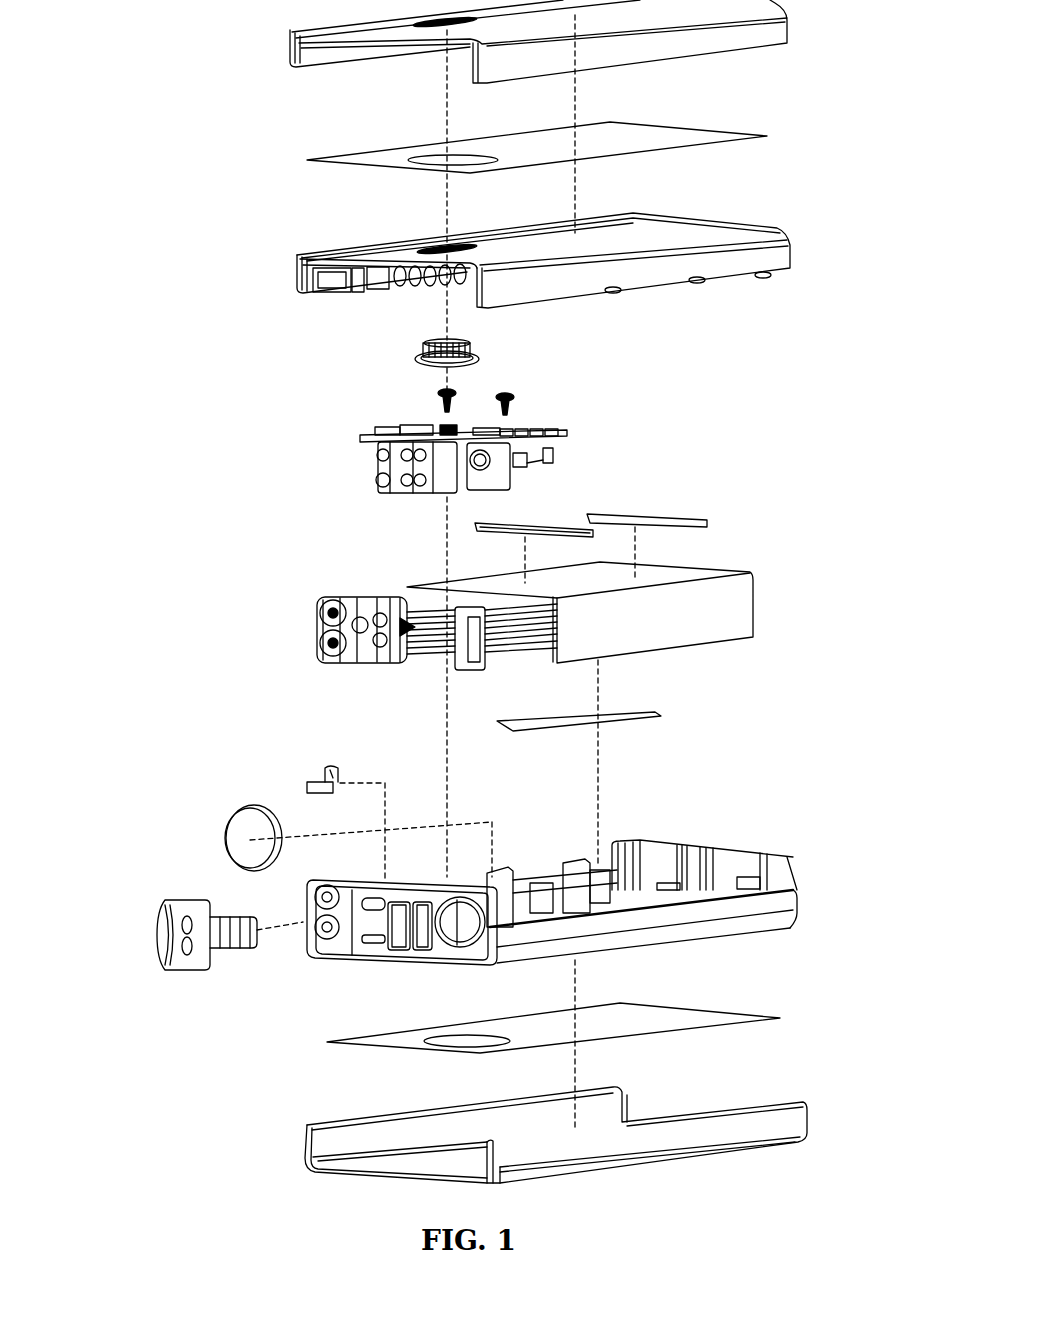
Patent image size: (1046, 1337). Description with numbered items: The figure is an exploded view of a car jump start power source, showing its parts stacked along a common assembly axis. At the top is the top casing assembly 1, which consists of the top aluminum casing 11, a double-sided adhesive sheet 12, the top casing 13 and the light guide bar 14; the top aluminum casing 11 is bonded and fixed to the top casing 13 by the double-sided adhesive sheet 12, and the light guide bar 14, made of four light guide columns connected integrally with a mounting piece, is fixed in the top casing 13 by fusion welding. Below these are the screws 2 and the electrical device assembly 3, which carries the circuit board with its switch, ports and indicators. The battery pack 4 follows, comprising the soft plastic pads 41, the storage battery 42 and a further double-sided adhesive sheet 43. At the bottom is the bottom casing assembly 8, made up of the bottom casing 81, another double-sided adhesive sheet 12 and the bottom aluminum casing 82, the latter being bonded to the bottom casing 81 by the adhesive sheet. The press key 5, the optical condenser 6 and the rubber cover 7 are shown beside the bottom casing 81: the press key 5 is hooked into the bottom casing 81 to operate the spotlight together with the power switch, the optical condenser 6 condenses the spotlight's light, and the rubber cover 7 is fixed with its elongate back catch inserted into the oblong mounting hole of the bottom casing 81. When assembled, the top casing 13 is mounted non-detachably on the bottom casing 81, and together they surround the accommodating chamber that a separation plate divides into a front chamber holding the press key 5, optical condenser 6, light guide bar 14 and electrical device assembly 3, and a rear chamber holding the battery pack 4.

The top casing assembly 1 is at (177, 238).
The top aluminum casing 11 is at (290, 68).
The double-sided adhesive sheet 12 is at (307, 161).
The top casing 13 is at (303, 258).
The light guide bar 14 is at (415, 353).
The screw 2 is at (440, 394).
The electrical device assembly 3 is at (367, 434).
The battery pack 4 is at (205, 640).
The soft plastic pad 41 is at (473, 523).
The storage battery 42 is at (717, 620).
The double-sided adhesive sheet 43 is at (497, 721).
The press key 5 is at (330, 783).
The optical condenser 6 is at (225, 838).
The rubber cover 7 is at (207, 973).
The bottom casing assembly 8 is at (233, 1053).
The bottom casing 81 is at (343, 957).
The bottom aluminum casing 82 is at (307, 1125).